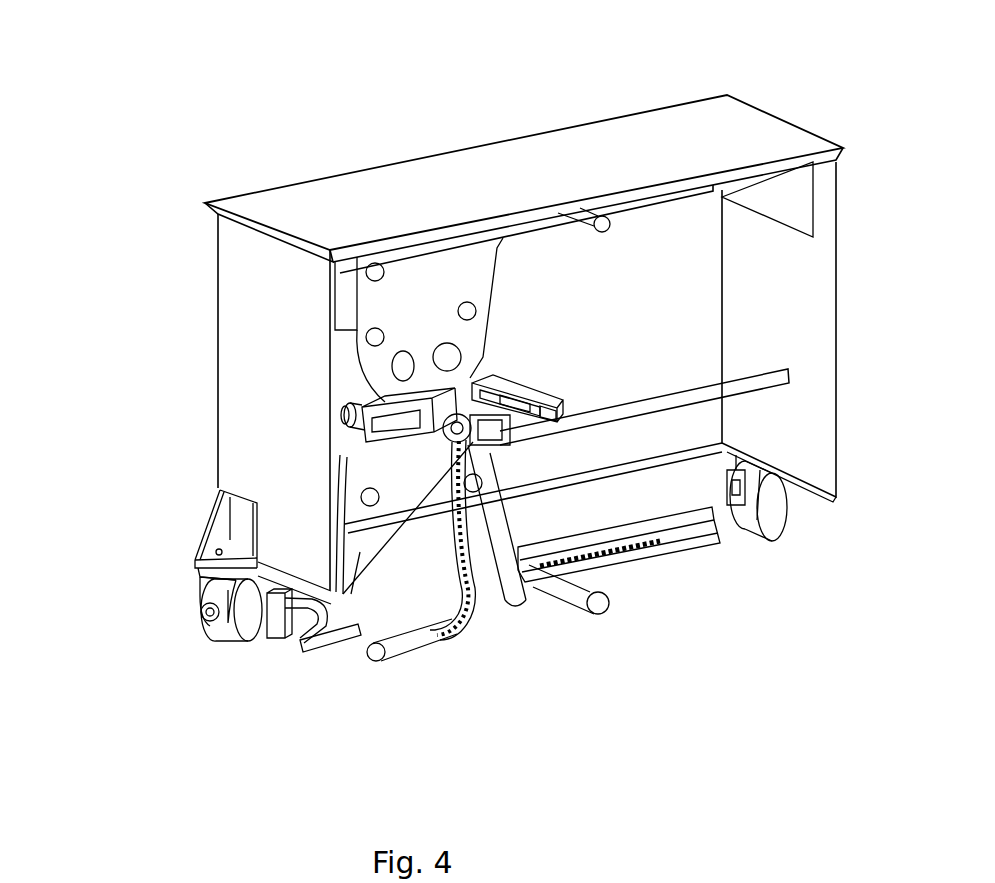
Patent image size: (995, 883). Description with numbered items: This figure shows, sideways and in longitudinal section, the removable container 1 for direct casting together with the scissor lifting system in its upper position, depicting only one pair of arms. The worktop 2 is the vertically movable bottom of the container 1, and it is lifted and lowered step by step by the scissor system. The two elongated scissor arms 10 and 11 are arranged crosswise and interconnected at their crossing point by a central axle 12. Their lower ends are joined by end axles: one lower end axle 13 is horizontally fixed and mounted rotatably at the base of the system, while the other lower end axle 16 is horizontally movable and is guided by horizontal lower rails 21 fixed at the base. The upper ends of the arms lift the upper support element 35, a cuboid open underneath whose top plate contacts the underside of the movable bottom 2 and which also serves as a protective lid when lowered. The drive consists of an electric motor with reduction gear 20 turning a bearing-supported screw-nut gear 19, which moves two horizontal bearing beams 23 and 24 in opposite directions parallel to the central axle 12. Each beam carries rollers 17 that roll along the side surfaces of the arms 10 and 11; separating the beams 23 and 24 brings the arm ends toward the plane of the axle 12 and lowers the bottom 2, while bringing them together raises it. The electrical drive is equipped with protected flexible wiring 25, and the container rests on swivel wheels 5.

The removable container 1 is at (285, 327).
The worktop (vertically movable bottom) 2 is at (472, 200).
The caster wheel 5 is at (228, 633).
The scissor arm 10 is at (405, 345).
The scissor arm 11 is at (457, 328).
The central axle 12 is at (500, 445).
The lower end axle 13 is at (360, 642).
The lower end axle 16 is at (497, 436).
The rollers 17 is at (350, 416).
The screw-nut gear 19 is at (547, 413).
The electric motor with reduction gear 20 is at (487, 535).
The lower rails 21 is at (668, 528).
The bearing beam 23 is at (398, 440).
The bearing beam 24 is at (512, 400).
The protected flexible wiring 25 is at (219, 551).
The upper support element 35 is at (347, 297).